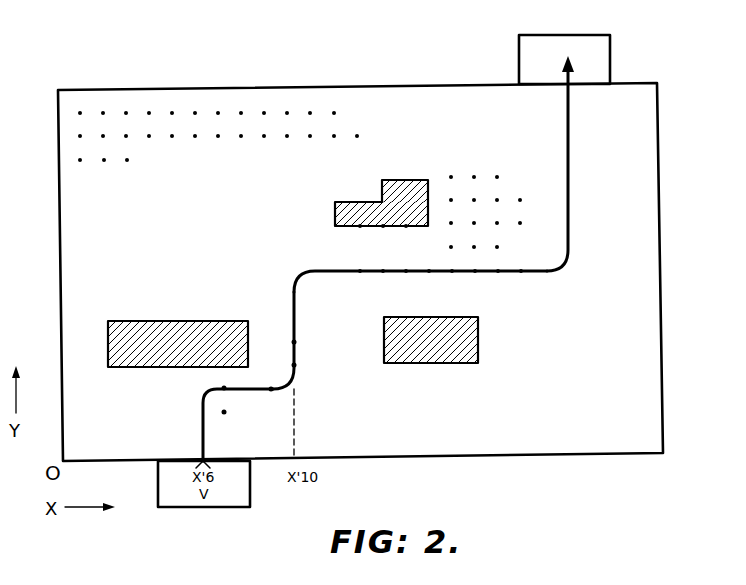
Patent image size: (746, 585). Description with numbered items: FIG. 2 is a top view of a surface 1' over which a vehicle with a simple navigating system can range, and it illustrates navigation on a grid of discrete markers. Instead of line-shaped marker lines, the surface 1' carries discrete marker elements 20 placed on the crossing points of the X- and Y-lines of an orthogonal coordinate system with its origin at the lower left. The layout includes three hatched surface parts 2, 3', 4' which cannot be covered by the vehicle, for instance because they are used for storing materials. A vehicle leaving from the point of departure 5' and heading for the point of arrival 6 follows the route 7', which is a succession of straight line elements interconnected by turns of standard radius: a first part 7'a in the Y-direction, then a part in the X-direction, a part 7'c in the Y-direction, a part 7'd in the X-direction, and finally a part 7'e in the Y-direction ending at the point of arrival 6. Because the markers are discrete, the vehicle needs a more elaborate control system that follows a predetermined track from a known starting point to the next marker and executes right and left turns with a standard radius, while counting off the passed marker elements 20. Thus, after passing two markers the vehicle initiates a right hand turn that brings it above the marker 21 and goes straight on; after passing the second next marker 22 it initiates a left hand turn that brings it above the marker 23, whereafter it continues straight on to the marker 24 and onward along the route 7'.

The surface 1' is at (383, 272).
The hatched surface part 2 is at (174, 331).
The hatched surface part 3' is at (381, 181).
The hatched surface part 4' is at (450, 340).
The point of departure 5' is at (191, 497).
The point of arrival 6 is at (594, 50).
The route 7' is at (421, 262).
The route part in Y-direction 7'a is at (211, 428).
The route part in Y-direction 7'c is at (311, 340).
The route part in X-direction 7'd is at (420, 285).
The route part in Y-direction 7'e is at (587, 163).
The discrete marker elements 20 is at (196, 137).
The marker 21 is at (223, 388).
The marker 22 is at (271, 390).
The marker 23 is at (296, 365).
The marker 24 is at (293, 342).